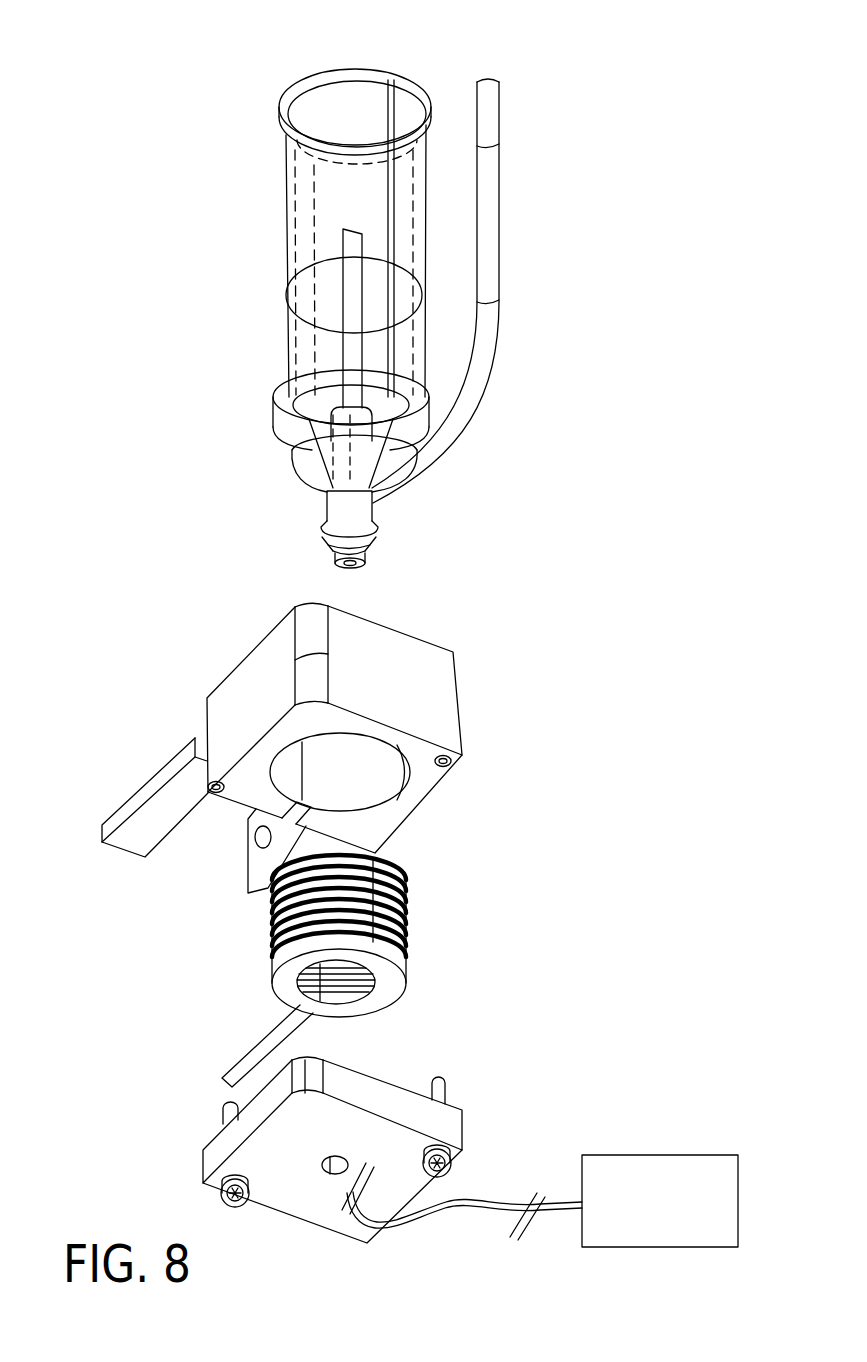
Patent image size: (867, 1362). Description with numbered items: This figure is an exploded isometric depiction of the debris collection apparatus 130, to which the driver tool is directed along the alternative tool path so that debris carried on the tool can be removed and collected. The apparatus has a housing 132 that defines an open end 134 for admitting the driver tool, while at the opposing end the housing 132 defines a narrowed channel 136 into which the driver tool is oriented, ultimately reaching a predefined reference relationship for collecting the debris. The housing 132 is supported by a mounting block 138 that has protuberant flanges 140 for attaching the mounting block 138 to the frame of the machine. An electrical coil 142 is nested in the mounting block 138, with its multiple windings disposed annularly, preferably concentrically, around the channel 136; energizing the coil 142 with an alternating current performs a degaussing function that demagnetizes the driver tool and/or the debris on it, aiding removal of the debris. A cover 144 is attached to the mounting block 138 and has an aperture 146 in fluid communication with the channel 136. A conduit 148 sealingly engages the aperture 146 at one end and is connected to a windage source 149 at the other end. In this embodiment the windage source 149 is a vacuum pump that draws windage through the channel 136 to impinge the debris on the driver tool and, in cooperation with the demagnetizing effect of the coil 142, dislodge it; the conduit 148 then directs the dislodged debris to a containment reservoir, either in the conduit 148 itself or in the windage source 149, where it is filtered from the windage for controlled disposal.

The debris collection apparatus 130 is at (175, 72).
The housing 132 is at (287, 293).
The open end 134 is at (338, 56).
The narrowed channel 136 is at (362, 584).
The mounting block 138 is at (456, 654).
The protuberant flanges 140 is at (248, 893).
The electrical coil 142 is at (407, 905).
The cover 144 is at (422, 1112).
The aperture 146 is at (316, 1150).
The conduit 148 is at (463, 1214).
The windage source 149 is at (673, 1155).